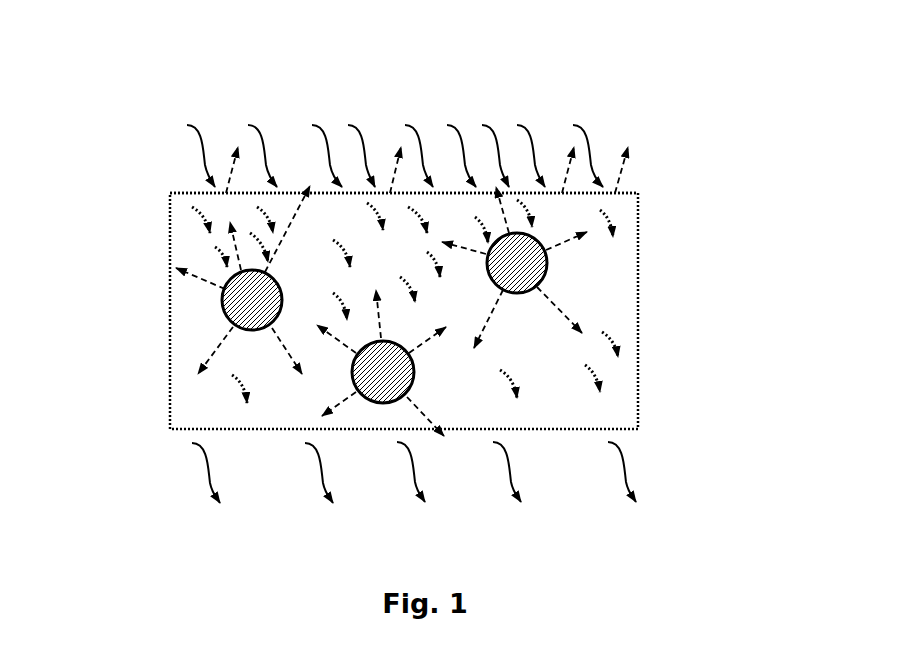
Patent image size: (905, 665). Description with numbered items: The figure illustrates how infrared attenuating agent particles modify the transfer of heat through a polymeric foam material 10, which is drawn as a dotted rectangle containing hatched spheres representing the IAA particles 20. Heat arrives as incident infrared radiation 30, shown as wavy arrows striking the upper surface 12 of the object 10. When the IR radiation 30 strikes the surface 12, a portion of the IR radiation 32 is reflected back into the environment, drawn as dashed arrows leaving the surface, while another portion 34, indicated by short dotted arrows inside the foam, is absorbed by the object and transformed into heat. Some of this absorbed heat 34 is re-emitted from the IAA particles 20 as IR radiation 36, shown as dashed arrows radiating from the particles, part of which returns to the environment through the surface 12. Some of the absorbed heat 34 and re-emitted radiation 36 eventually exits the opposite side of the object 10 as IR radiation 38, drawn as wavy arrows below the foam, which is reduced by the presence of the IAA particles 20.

The polymeric foam material 10 is at (670, 238).
The surface 12 is at (187, 192).
The IAA particles 20 is at (240, 307).
The infrared radiation 30 is at (193, 122).
The reflected portion of IR radiation 32 is at (615, 162).
The absorbed portion of IR radiation 34 is at (222, 252).
The re-emitted IR radiation 36 is at (577, 262).
The emitted IR radiation 38 is at (217, 483).